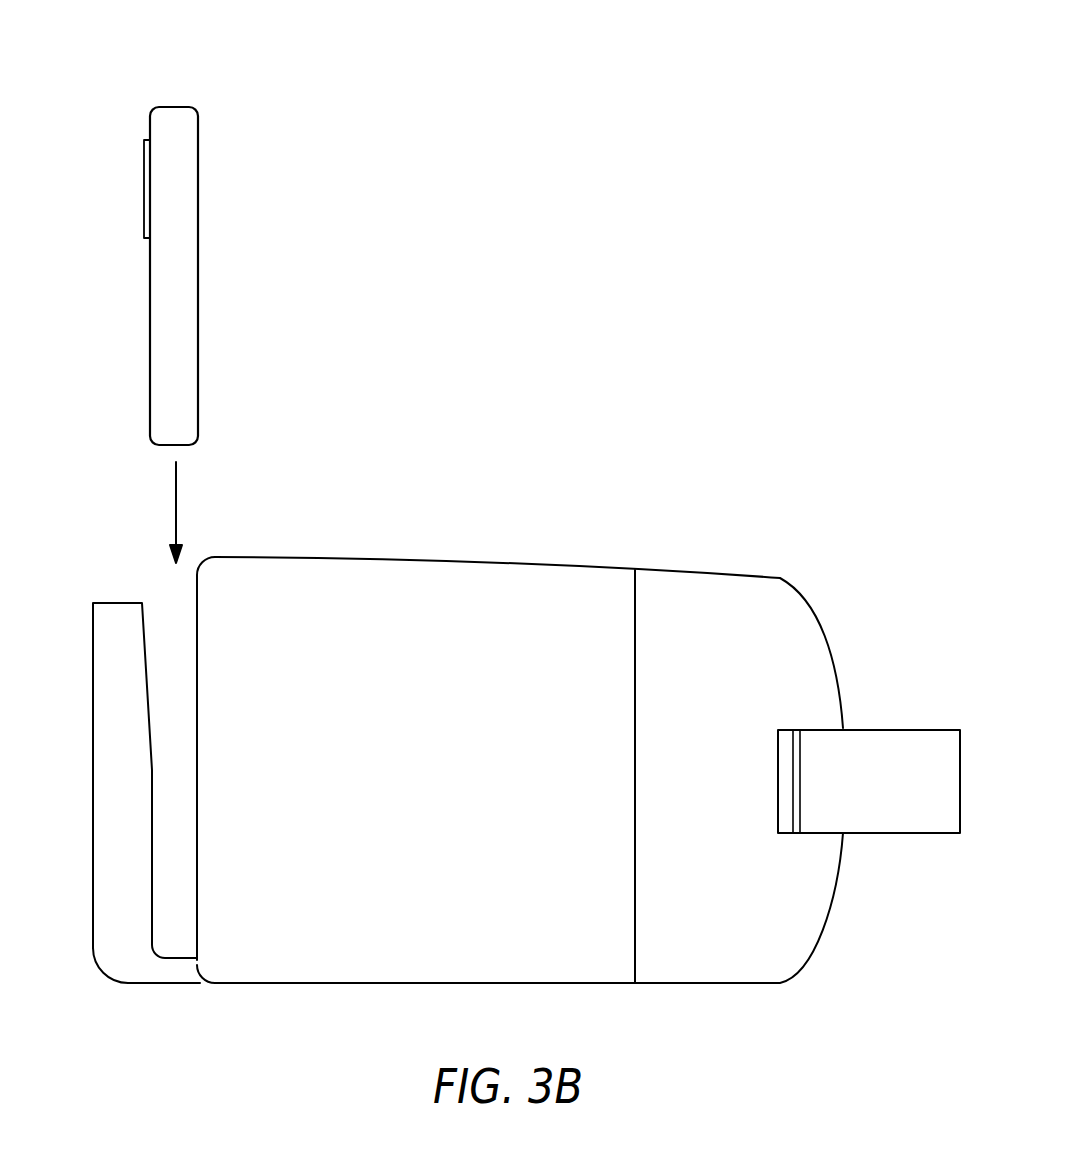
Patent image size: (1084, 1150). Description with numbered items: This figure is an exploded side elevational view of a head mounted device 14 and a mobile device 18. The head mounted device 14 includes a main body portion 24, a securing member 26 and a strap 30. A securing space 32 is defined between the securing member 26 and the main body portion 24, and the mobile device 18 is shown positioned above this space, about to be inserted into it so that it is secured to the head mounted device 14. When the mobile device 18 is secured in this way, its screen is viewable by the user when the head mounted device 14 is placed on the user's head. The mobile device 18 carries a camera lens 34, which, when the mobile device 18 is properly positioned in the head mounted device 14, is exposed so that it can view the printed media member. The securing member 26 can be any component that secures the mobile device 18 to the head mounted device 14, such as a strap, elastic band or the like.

The head mounted device 14 is at (715, 436).
The mobile device 18 is at (120, 225).
The main body portion 24 is at (218, 558).
The securing member 26 is at (131, 814).
The strap 30 is at (903, 730).
The securing space 32 is at (172, 606).
The camera lens 34 is at (143, 213).